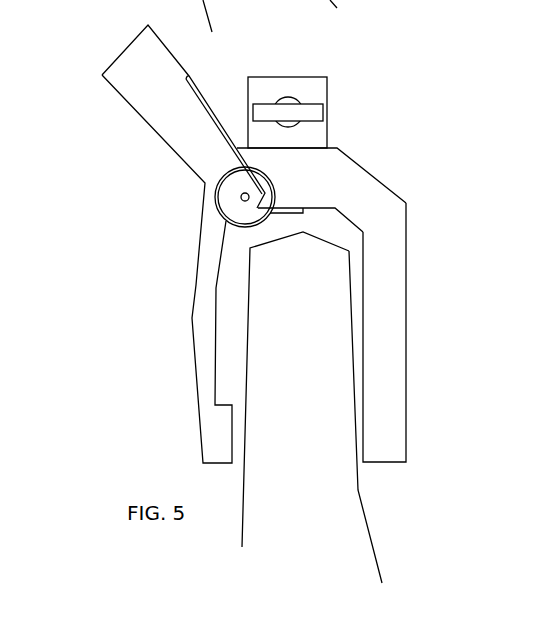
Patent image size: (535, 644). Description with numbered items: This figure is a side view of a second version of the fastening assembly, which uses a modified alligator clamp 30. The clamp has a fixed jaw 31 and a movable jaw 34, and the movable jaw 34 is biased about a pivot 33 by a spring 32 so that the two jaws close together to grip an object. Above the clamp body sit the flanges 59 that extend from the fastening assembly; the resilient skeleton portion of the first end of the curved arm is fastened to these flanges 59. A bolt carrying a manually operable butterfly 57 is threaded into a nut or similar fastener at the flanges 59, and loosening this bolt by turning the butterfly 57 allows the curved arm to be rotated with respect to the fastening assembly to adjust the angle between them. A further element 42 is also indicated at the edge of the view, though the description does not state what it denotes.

The fork body 30 is at (413, 163).
The right arm of fork body 31 is at (390, 302).
The pivot ring 32 is at (224, 223).
The pivot pin 33 is at (241, 199).
The lever arm 34 is at (182, 123).
The adjacent member 42 is at (511, 400).
The fastener with slot 57 is at (317, 113).
The mounting block 59 is at (310, 85).